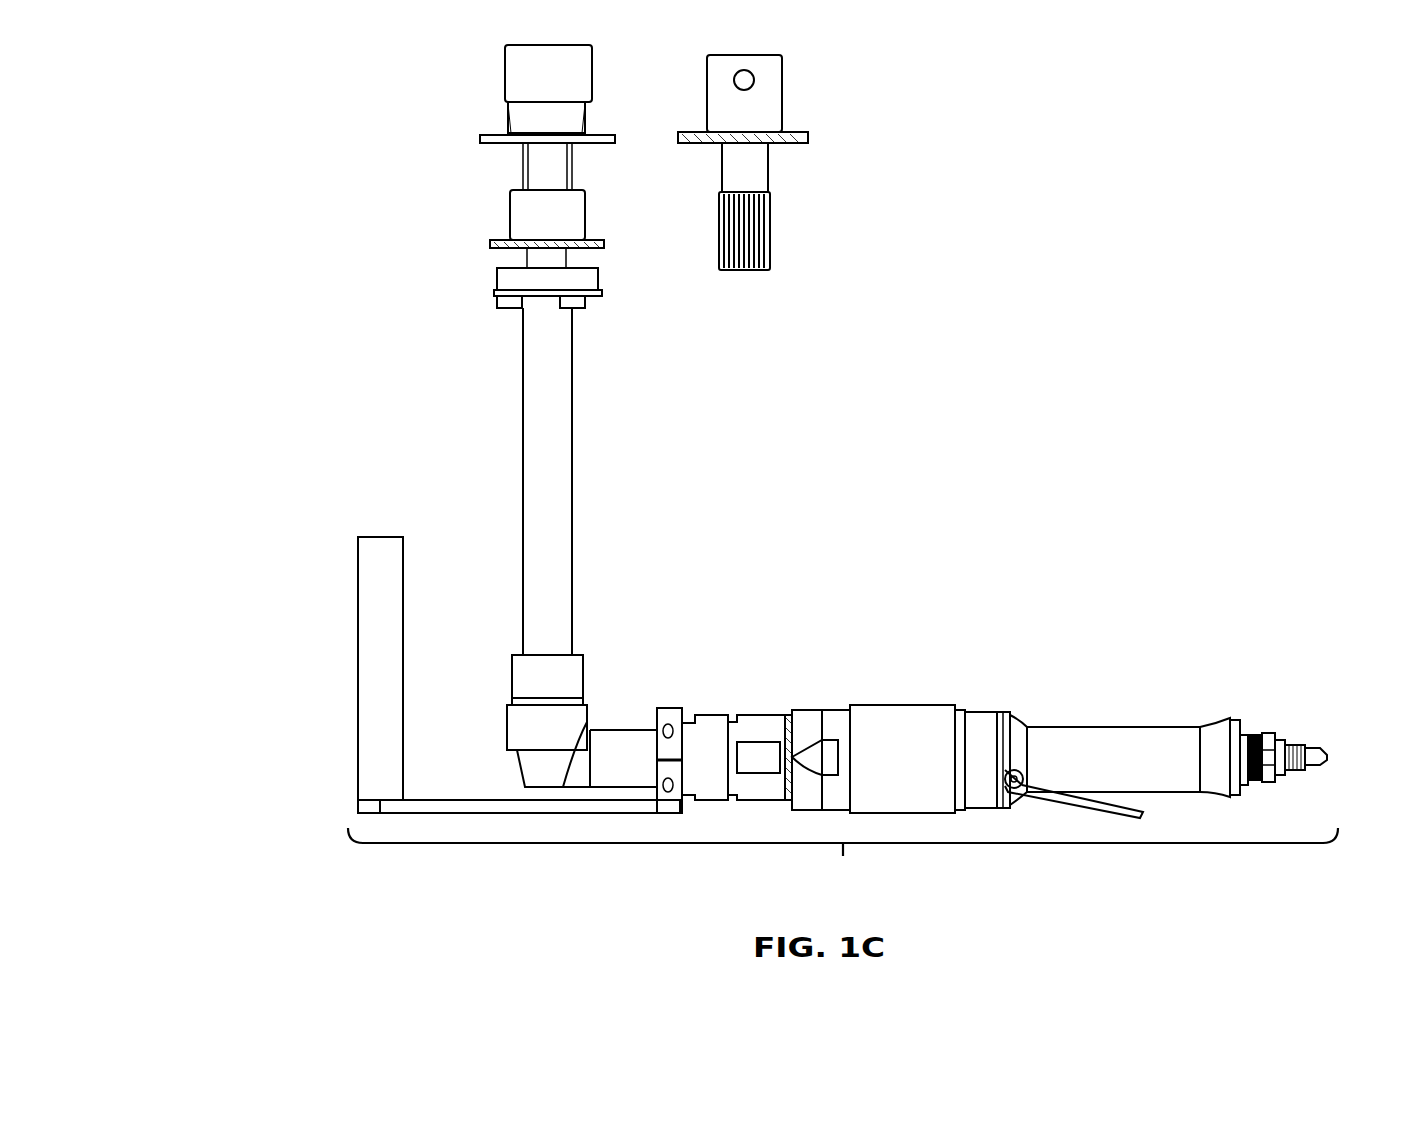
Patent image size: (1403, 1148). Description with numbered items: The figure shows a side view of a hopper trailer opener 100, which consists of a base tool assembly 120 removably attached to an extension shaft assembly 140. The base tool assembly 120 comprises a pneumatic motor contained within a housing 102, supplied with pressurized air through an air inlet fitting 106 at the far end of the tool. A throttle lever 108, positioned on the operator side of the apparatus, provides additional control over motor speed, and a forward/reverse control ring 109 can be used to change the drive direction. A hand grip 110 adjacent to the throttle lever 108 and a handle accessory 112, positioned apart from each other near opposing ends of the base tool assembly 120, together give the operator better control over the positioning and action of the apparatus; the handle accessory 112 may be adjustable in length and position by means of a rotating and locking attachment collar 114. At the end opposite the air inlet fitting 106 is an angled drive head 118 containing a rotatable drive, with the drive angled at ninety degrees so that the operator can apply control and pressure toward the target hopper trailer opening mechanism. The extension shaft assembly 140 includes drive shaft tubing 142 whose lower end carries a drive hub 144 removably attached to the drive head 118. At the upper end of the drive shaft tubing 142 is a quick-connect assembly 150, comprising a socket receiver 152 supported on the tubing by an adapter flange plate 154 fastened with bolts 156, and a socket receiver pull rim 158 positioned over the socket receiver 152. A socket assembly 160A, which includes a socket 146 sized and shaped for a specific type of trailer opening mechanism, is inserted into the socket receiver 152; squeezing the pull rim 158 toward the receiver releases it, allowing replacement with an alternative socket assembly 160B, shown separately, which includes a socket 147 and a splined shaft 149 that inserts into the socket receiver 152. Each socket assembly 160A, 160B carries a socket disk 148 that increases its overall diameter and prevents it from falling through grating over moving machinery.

The hopper trailer opener 100 is at (1165, 255).
The housing 102 is at (906, 702).
The air inlet fitting 106 is at (1289, 740).
The throttle lever 108 is at (1129, 803).
The forward/reverse control ring 109 is at (978, 708).
The hand grip 110 is at (1080, 724).
The handle accessory 112 is at (353, 588).
The attachment collar 114 is at (670, 703).
The angled drive head 118 is at (504, 732).
The base tool assembly 120 is at (843, 863).
The extension shaft assembly 140 is at (632, 43).
The drive shaft tubing 142 is at (518, 452).
The drive hub 144 is at (511, 652).
The socket 146 is at (504, 70).
The socket 147 is at (784, 91).
The socket disk 148 is at (478, 140).
The splined shaft 149 is at (772, 209).
The quick-connect assembly 150 is at (462, 190).
The socket receiver 152 is at (495, 277).
The adapter flange plate 154 is at (493, 293).
The bolts 156 is at (502, 309).
The socket receiver pull rim 158 is at (506, 212).
The socket assembly 160A is at (473, 43).
The socket assembly 160B is at (822, 55).